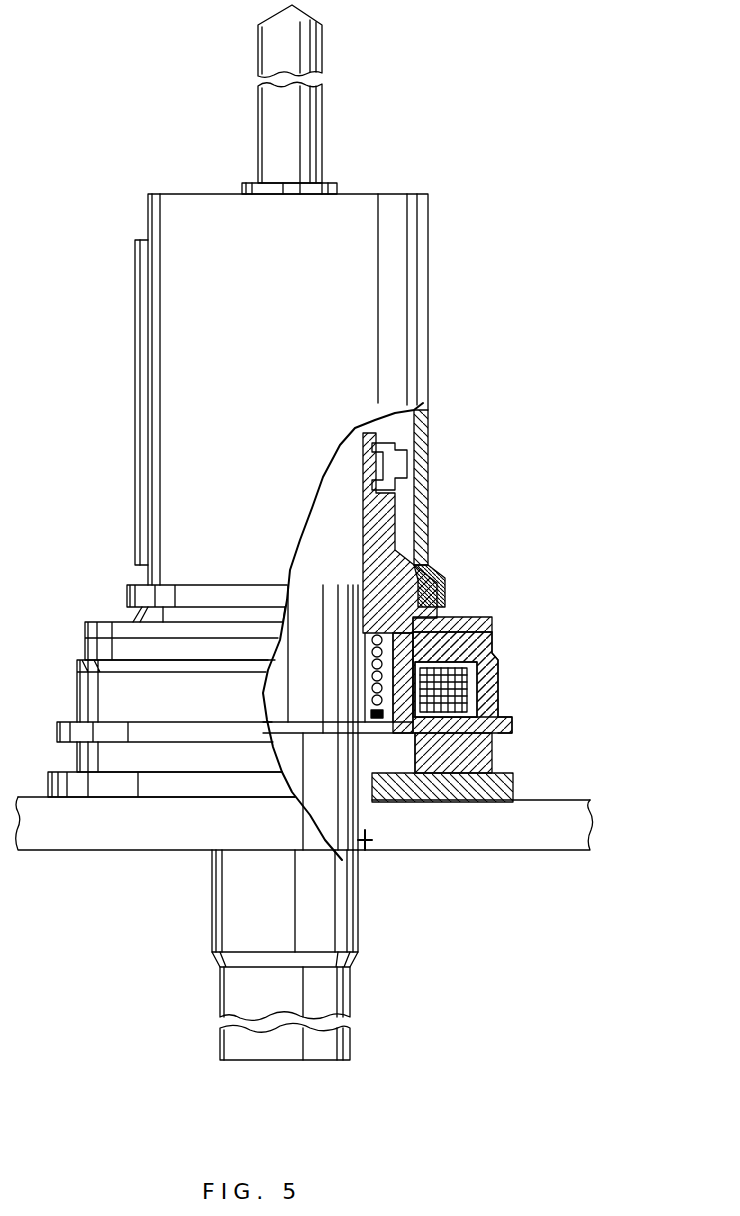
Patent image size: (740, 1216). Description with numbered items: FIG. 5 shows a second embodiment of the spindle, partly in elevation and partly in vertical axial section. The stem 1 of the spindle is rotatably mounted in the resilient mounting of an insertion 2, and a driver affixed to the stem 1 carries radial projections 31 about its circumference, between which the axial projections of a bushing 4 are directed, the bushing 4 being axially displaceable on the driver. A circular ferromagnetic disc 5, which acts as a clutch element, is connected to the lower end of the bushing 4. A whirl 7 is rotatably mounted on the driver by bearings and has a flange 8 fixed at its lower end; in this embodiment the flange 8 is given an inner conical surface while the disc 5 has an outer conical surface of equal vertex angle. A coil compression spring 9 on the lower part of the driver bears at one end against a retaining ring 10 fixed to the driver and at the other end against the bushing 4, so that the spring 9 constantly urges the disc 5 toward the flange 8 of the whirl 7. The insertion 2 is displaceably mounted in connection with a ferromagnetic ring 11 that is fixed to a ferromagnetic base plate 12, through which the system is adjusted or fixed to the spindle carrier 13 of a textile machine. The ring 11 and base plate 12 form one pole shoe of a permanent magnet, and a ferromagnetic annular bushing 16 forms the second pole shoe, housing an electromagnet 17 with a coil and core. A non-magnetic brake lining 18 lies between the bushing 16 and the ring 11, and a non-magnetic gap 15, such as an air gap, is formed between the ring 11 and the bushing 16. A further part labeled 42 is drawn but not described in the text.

The stem 1 is at (325, 100).
The insertion 2 is at (352, 930).
The bushing 4 is at (393, 511).
The circular ferromagnetic disc 5 is at (493, 617).
The whirl 7 is at (430, 366).
The flange 8 is at (446, 582).
The coil compression spring 9 is at (385, 628).
The retaining ring 10 is at (378, 722).
The ferromagnetic ring 11 is at (366, 850).
The ferromagnetic base plate 12 is at (505, 782).
The spindle carrier 13 is at (570, 820).
The non-magnetic gap 15 is at (418, 767).
The ferromagnetic annular bushing 16 is at (507, 723).
The electromagnet 17 is at (460, 688).
The non-magnetic brake lining 18 is at (473, 647).
The radial projections 31 is at (400, 452).
The lug 42 is at (135, 380).